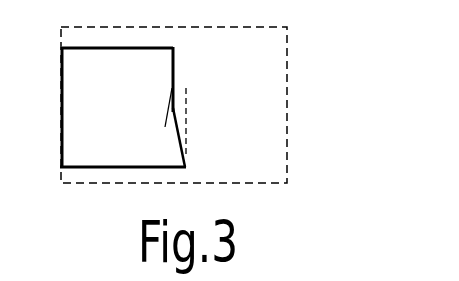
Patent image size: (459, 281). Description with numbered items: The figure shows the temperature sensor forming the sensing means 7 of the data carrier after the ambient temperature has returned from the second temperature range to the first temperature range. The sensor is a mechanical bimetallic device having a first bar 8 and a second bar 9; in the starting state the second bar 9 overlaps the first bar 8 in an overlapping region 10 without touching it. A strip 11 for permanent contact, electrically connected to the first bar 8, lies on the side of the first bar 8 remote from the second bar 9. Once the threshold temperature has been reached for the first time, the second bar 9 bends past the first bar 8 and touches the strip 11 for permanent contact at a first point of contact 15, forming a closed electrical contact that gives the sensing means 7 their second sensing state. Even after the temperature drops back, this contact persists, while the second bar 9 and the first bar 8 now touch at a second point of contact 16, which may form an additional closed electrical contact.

The sensing means 7 is at (294, 51).
The first bar 8 is at (175, 63).
The second bar 9 is at (187, 158).
The overlapping region 10 is at (194, 118).
The strip for permanent contact 11 is at (162, 125).
The first point of contact 15 is at (165, 138).
The second point of contact 16 is at (184, 88).